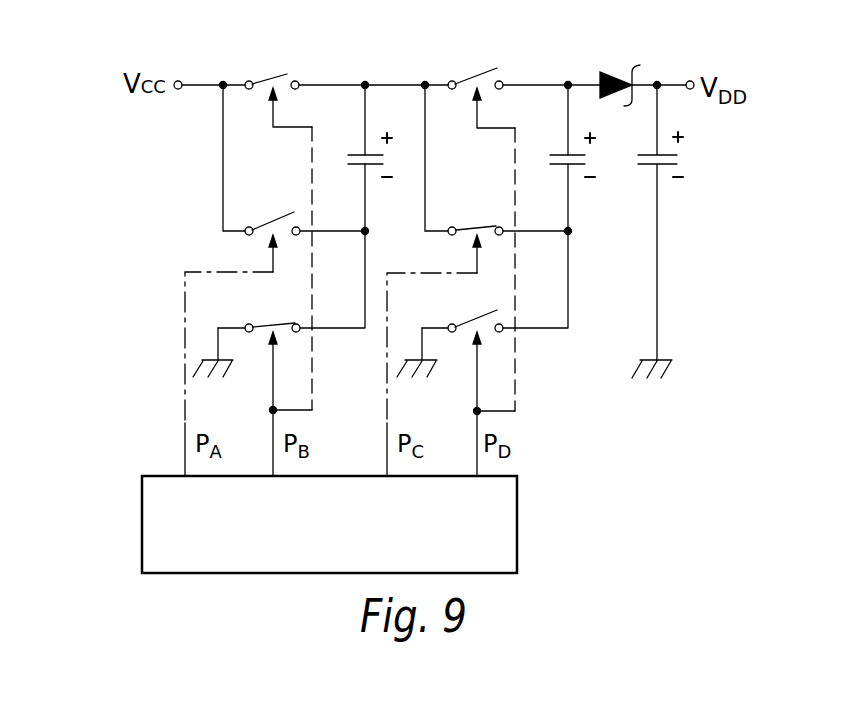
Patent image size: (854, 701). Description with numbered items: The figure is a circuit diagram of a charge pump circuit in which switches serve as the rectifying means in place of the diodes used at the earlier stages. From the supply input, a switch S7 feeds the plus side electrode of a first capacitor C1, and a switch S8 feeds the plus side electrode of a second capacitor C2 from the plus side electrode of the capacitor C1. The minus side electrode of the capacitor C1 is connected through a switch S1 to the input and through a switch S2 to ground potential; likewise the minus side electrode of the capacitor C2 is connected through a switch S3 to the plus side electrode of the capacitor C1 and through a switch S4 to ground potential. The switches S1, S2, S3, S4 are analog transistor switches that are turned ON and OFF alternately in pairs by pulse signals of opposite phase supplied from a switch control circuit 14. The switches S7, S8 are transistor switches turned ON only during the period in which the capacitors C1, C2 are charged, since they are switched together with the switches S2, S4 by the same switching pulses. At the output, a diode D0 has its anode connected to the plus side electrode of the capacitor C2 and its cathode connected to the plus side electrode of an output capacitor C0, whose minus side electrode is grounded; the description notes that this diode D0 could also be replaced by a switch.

The switch control circuit 14 is at (494, 553).
The switch S1 is at (272, 209).
The switch S2 is at (272, 308).
The switch S3 is at (475, 209).
The switch S4 is at (475, 308).
The switch S7 is at (272, 67).
The switch S8 is at (475, 67).
The output capacitor C0 is at (650, 222).
The first capacitor C1 is at (359, 147).
The capacitor C2 is at (562, 147).
The diode D0 is at (615, 73).